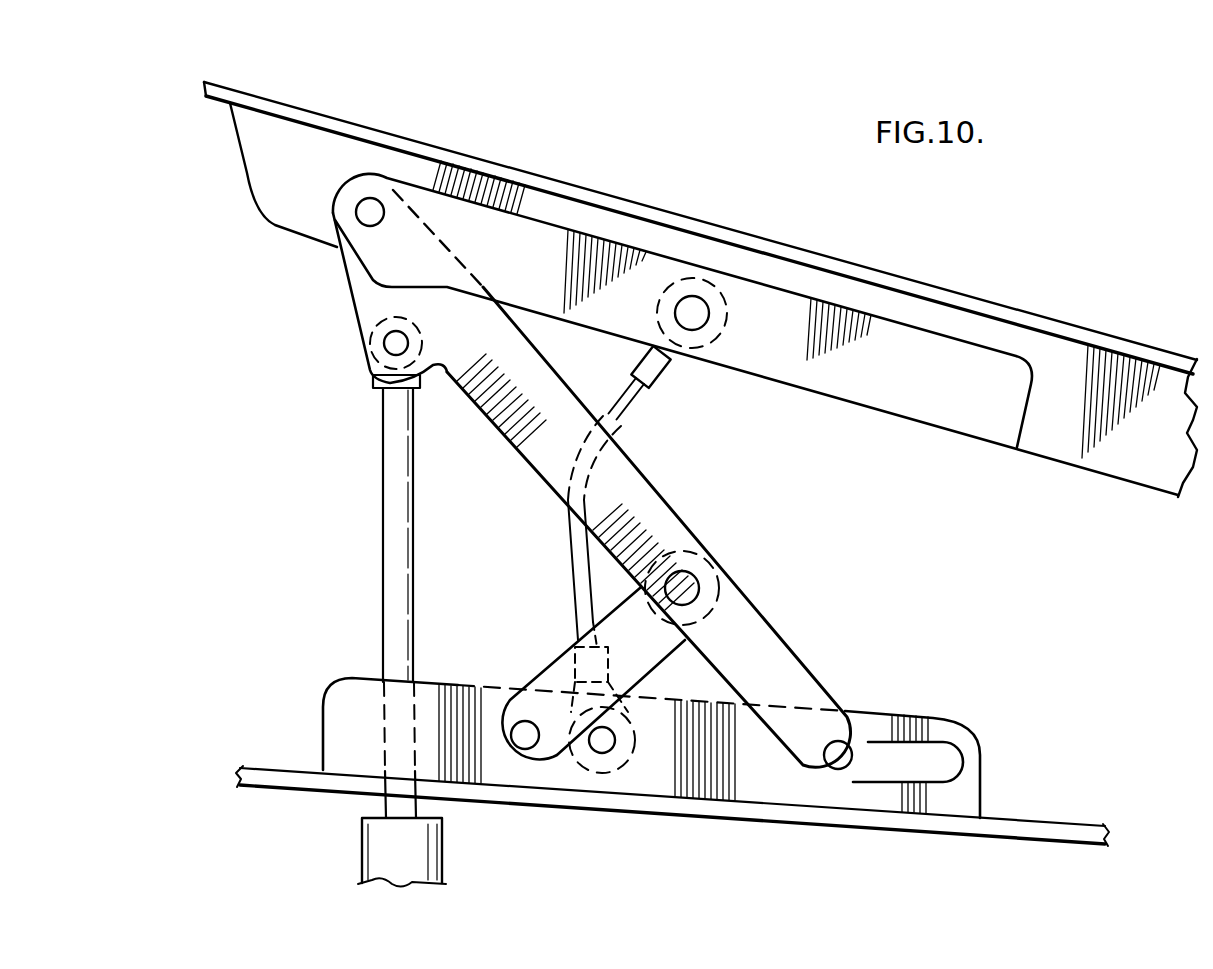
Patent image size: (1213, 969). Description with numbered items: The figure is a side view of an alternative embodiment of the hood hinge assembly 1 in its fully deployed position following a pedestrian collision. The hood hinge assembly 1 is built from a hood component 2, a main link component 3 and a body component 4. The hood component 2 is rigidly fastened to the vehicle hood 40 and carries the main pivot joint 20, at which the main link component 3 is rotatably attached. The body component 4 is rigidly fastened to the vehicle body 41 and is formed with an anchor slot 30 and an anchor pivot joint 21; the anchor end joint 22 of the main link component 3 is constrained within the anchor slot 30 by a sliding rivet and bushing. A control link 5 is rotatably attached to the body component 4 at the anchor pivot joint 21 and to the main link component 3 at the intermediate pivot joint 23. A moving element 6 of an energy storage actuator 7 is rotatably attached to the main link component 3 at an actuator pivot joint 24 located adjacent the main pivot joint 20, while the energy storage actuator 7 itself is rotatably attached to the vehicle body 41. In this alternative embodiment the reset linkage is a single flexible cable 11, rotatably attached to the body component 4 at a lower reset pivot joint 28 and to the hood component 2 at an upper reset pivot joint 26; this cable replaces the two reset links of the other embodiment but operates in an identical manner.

The hood hinge assembly 1 is at (1001, 618).
The hood component 2 is at (880, 383).
The main link component 3 is at (673, 523).
The body component 4 is at (340, 690).
The control link 5 is at (550, 670).
The moving element 6 is at (390, 465).
The energy storage actuator 7 is at (375, 850).
The flexible cable 11 is at (627, 400).
The main pivot joint 20 is at (363, 207).
The anchor pivot joint 21 is at (523, 723).
The anchor end joint 22 is at (837, 750).
The intermediate pivot joint 23 is at (690, 587).
The actuator pivot joint 24 is at (390, 340).
The upper reset pivot joint 26 is at (695, 320).
The lower reset pivot joint 28 is at (597, 745).
The anchor slot 30 is at (950, 723).
The vehicle hood 40 is at (1017, 317).
The vehicle body 41 is at (1060, 828).